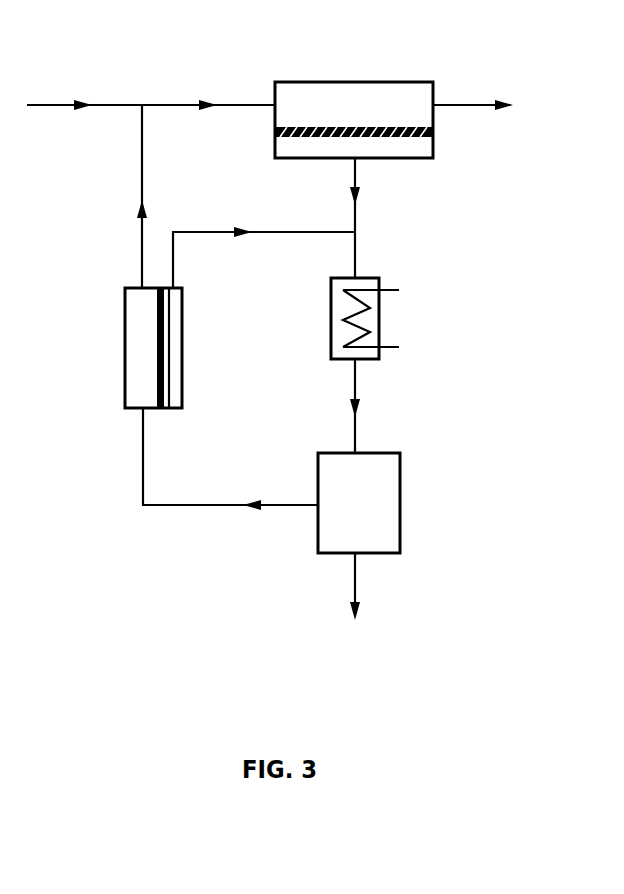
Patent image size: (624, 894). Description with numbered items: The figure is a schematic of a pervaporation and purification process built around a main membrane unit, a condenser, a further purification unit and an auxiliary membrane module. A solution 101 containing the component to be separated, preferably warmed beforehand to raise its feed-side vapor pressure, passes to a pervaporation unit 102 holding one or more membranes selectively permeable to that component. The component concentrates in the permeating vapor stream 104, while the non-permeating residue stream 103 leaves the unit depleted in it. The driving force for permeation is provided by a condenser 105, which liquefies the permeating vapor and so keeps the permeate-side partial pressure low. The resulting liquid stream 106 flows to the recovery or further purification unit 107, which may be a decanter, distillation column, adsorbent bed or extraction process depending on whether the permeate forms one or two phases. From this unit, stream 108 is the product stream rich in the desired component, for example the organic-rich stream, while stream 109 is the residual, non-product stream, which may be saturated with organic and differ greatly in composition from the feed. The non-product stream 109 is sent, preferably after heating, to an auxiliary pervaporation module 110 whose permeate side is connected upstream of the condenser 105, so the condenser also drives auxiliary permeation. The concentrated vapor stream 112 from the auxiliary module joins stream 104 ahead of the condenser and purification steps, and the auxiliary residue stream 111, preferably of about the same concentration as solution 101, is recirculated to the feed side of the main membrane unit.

The solution 101 is at (151, 87).
The pervaporation unit 102 is at (343, 82).
The residue stream 103 is at (498, 105).
The vapor stream 104 is at (382, 218).
The condenser 105 is at (370, 278).
The liquid stream 106 is at (381, 406).
The further purification unit 107 is at (400, 456).
The product stream 108 is at (359, 608).
The non-product stream 109 is at (230, 478).
The auxiliary pervaporation module 110 is at (125, 377).
The residue stream from auxiliary unit 111 is at (114, 196).
The concentrated vapor stream 112 is at (264, 243).